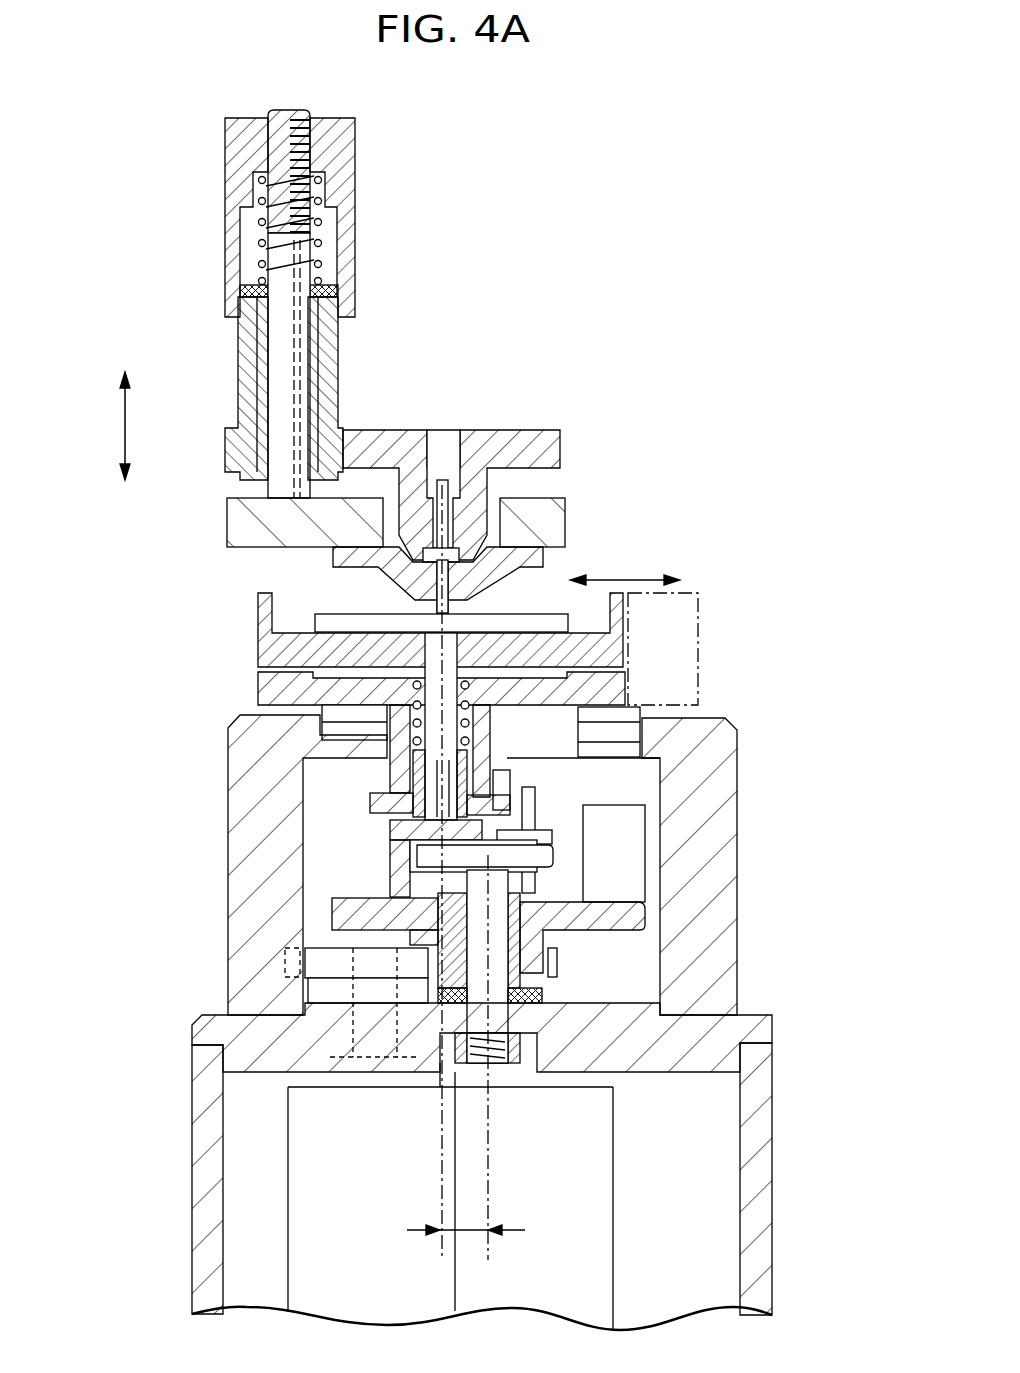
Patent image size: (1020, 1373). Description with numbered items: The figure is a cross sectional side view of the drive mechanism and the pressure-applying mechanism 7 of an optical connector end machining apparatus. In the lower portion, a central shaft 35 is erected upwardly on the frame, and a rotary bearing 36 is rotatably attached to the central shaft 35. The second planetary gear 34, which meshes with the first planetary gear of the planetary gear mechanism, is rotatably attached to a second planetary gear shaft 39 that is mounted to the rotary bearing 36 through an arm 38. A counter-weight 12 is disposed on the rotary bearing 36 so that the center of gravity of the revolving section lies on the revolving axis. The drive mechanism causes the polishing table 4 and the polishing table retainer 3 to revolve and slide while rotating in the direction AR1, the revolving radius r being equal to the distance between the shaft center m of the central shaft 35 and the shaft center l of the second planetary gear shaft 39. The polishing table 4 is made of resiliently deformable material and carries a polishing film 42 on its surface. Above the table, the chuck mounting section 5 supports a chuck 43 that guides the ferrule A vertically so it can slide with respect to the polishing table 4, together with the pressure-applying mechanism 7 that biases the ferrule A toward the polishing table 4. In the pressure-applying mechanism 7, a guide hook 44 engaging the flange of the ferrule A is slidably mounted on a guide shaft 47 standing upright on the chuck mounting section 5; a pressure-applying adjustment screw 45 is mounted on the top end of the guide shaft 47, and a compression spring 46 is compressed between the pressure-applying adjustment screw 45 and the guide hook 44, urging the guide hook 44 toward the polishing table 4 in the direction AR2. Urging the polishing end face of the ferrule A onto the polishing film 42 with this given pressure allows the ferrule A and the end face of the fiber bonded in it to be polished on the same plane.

The polishing table retainer 3 is at (617, 692).
The polishing table 4 is at (617, 660).
The chuck mounting section 5 is at (553, 518).
The pressure-applying mechanism 7 is at (372, 277).
The counter-weight 12 is at (630, 857).
The second planetary gear 34 is at (520, 782).
The central shaft 35 is at (522, 962).
The rotary bearing 36 is at (630, 917).
The arm 38 is at (387, 875).
The second planetary gear shaft 39 is at (433, 773).
The polishing film 42 is at (567, 625).
The chuck 43 is at (543, 563).
The guide hook 44 is at (560, 450).
The pressure-applying adjustment screw 45 is at (350, 130).
The compression spring 46 is at (320, 199).
The guide shaft 47 is at (285, 362).
The ferrule A is at (462, 472).
The rotating direction AR1 is at (640, 575).
The urging direction AR2 is at (122, 425).
The shaft center of the second planetary gear shaft l is at (437, 1248).
The shaft center of the central shaft m is at (490, 1258).
The revolving radius r is at (478, 1228).